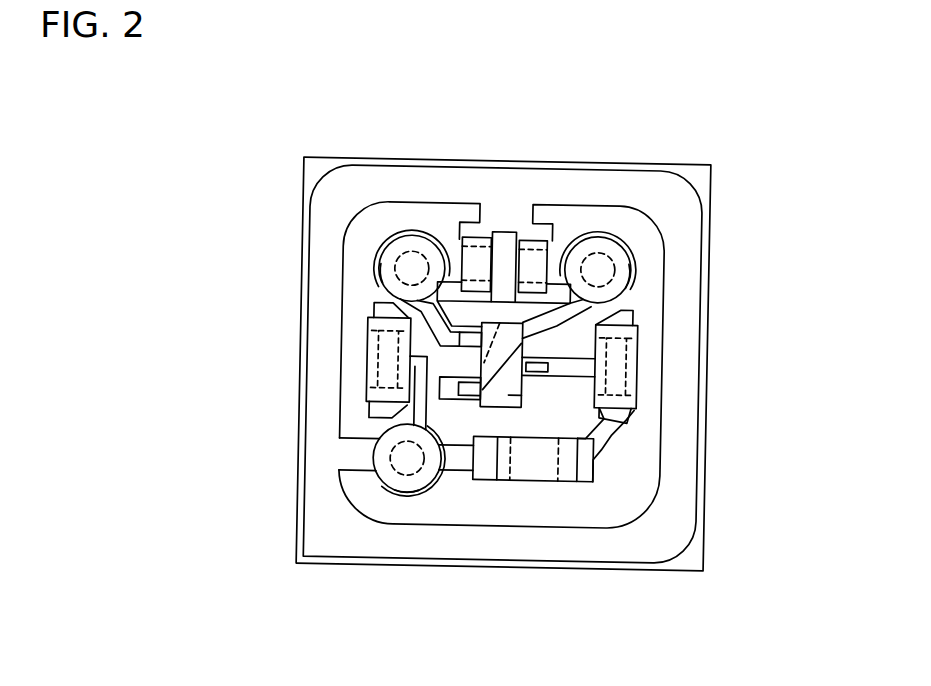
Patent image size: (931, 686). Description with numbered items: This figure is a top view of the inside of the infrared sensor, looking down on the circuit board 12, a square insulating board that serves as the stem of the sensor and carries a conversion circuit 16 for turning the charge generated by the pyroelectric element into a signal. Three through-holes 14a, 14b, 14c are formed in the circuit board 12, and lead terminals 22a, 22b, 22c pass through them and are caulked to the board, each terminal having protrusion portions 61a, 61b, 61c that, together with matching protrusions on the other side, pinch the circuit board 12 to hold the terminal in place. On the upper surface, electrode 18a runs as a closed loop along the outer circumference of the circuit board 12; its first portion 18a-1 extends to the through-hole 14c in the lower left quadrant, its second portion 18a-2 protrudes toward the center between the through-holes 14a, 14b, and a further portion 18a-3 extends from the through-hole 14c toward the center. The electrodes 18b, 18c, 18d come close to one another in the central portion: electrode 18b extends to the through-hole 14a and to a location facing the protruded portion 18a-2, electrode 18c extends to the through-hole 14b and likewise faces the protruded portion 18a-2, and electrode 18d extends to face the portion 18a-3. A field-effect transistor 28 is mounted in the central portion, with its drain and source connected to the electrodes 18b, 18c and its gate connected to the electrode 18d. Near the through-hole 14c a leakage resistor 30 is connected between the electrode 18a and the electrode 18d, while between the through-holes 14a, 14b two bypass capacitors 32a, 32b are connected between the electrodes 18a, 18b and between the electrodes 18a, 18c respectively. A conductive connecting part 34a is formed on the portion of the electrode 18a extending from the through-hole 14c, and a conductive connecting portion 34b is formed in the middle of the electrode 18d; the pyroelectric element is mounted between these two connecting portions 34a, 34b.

The circuit board 12 is at (690, 180).
The through-hole 14a is at (387, 258).
The through-hole 14b is at (619, 258).
The through-hole 14c is at (383, 464).
The conversion circuit 16 is at (616, 494).
The electrode 18a is at (323, 398).
The first portion of electrode 18a 18a-1 is at (352, 465).
The second portion of electrode 18a 18a-2 is at (501, 231).
The portion of electrode 18a 18a-3 is at (485, 460).
The electrode 18b is at (412, 310).
The electrode 18c is at (569, 304).
The electrode 18d is at (602, 441).
The lead terminal 22a is at (410, 234).
The lead terminal 22b is at (601, 230).
The lead terminal 22c is at (405, 499).
The field-effect transistor 28 is at (528, 398).
The leakage resistor 30 is at (540, 459).
The bypass capacitor 32a is at (486, 236).
The bypass capacitor 32b is at (525, 237).
The connecting part 34a is at (372, 357).
The connecting portion 34b is at (634, 352).
The protrusion portion 61a is at (385, 251).
The protrusion portion 61b is at (617, 295).
The protrusion portion 61c is at (403, 488).